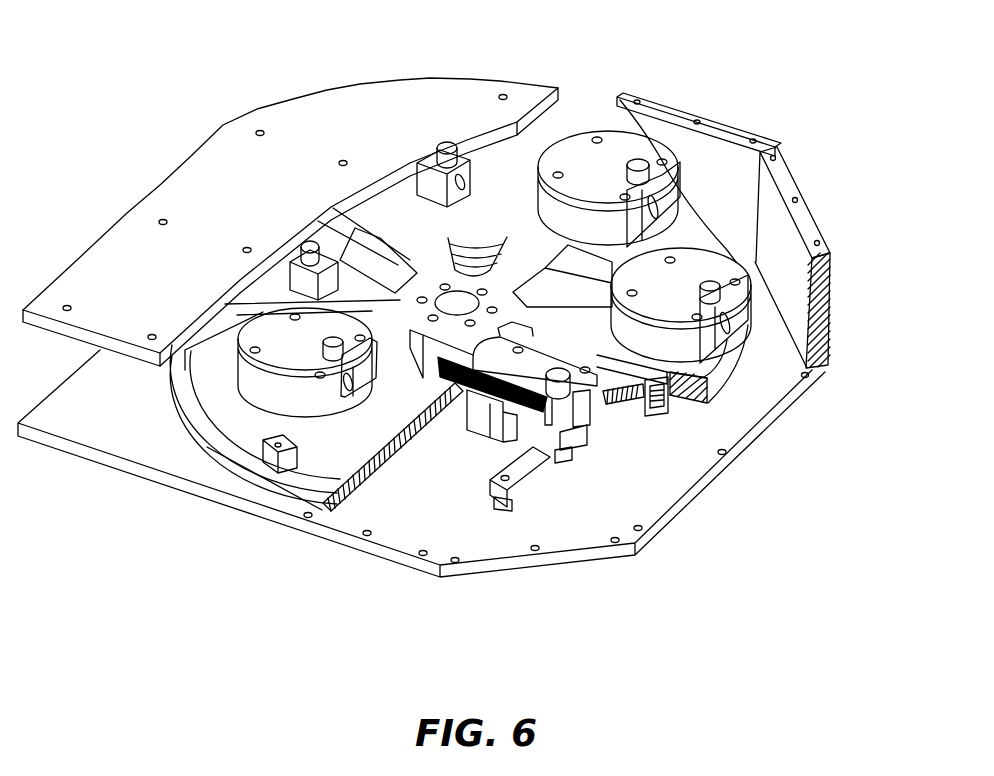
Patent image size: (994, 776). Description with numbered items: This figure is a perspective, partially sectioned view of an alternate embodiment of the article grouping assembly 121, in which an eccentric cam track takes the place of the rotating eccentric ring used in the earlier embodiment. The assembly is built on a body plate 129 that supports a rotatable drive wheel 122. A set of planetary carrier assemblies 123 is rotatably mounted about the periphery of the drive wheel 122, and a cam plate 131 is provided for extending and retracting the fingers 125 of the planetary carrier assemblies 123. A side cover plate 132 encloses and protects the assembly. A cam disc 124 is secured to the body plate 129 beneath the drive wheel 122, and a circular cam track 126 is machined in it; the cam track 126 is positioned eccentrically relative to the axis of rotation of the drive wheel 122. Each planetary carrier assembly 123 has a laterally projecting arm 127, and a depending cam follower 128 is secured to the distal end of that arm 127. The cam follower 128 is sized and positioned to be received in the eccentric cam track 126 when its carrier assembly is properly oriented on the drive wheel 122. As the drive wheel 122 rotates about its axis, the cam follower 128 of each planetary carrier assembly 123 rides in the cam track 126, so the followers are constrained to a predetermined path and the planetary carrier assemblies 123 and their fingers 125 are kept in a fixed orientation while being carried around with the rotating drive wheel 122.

The article grouping assembly 121 is at (188, 114).
The drive wheel 122 is at (690, 240).
The planetary carrier assemblies 123 is at (250, 325).
The cam disc 124 is at (207, 448).
The fingers 125 is at (537, 147).
The cam track 126 is at (340, 493).
The arm 127 is at (295, 460).
The cam follower 128 is at (500, 497).
The body plate 129 is at (677, 477).
The cam plate 131 is at (327, 132).
The side cover plate 132 is at (793, 190).